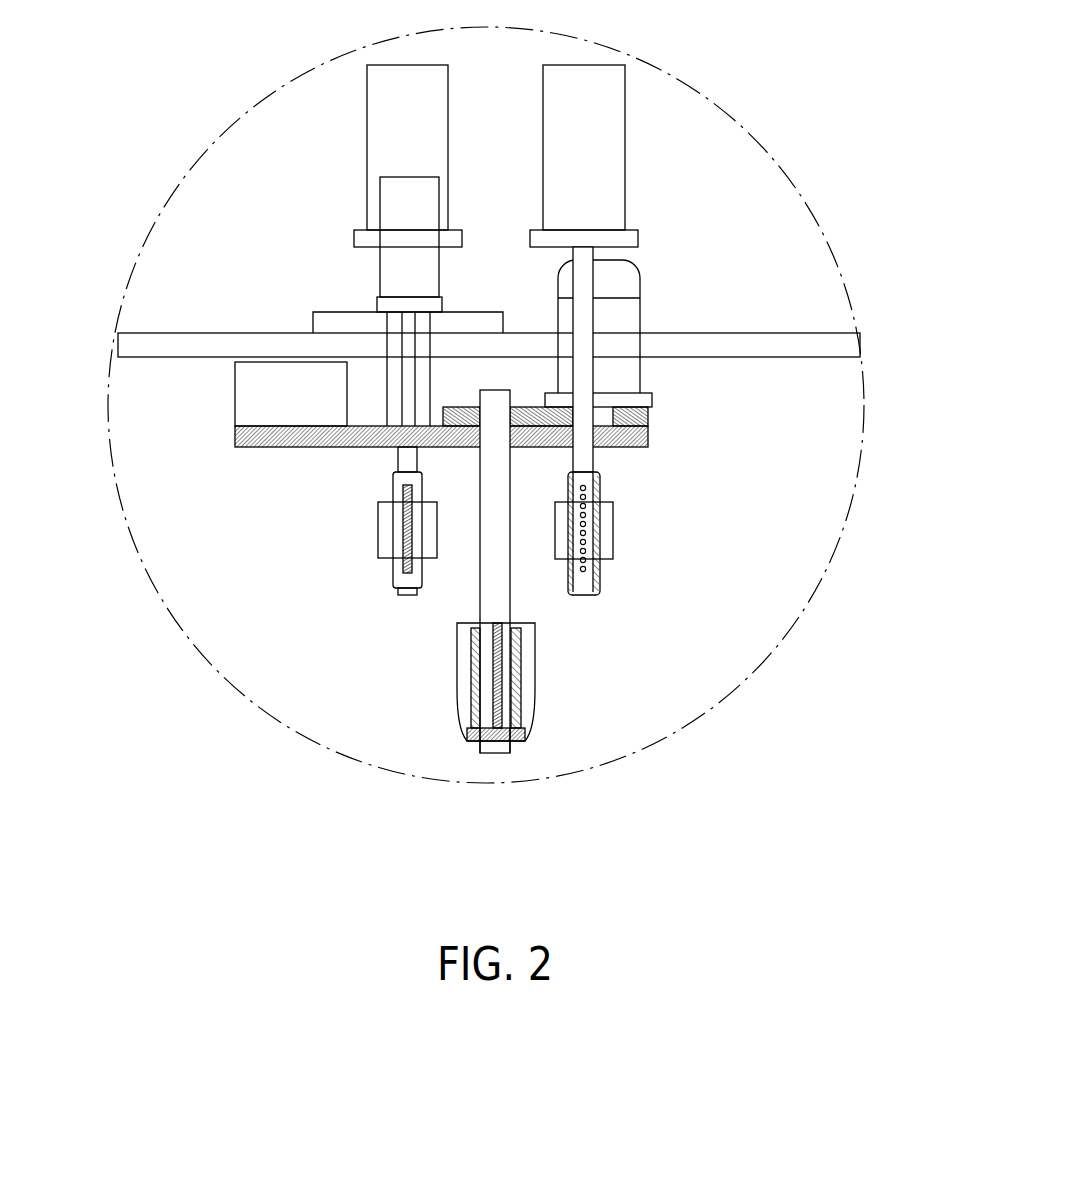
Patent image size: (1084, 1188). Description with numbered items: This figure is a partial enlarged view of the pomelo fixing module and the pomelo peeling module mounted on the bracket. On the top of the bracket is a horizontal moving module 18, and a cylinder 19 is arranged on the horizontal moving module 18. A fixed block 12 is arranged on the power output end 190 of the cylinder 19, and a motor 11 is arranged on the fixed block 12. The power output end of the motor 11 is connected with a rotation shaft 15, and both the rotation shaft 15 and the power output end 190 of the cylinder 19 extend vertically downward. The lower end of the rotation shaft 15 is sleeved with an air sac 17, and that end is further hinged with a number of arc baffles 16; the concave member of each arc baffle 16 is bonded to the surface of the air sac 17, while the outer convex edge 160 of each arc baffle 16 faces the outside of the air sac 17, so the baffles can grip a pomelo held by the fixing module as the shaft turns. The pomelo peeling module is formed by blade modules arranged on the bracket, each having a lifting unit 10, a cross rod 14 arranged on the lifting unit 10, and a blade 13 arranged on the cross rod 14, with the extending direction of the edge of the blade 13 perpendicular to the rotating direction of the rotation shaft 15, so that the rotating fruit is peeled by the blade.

The lifting unit 10 is at (377, 118).
The motor 11 is at (632, 322).
The fixed block 12 is at (642, 435).
The blade 13 is at (405, 561).
The cross rod 14 is at (402, 531).
The rotation shaft 15 is at (500, 559).
The arc baffle 16 is at (528, 697).
The air sac 17 is at (475, 675).
The horizontal moving module 18 is at (332, 325).
The cylinder 19 is at (390, 270).
The outer convex edge 160 is at (527, 722).
The power output end 190 is at (650, 411).